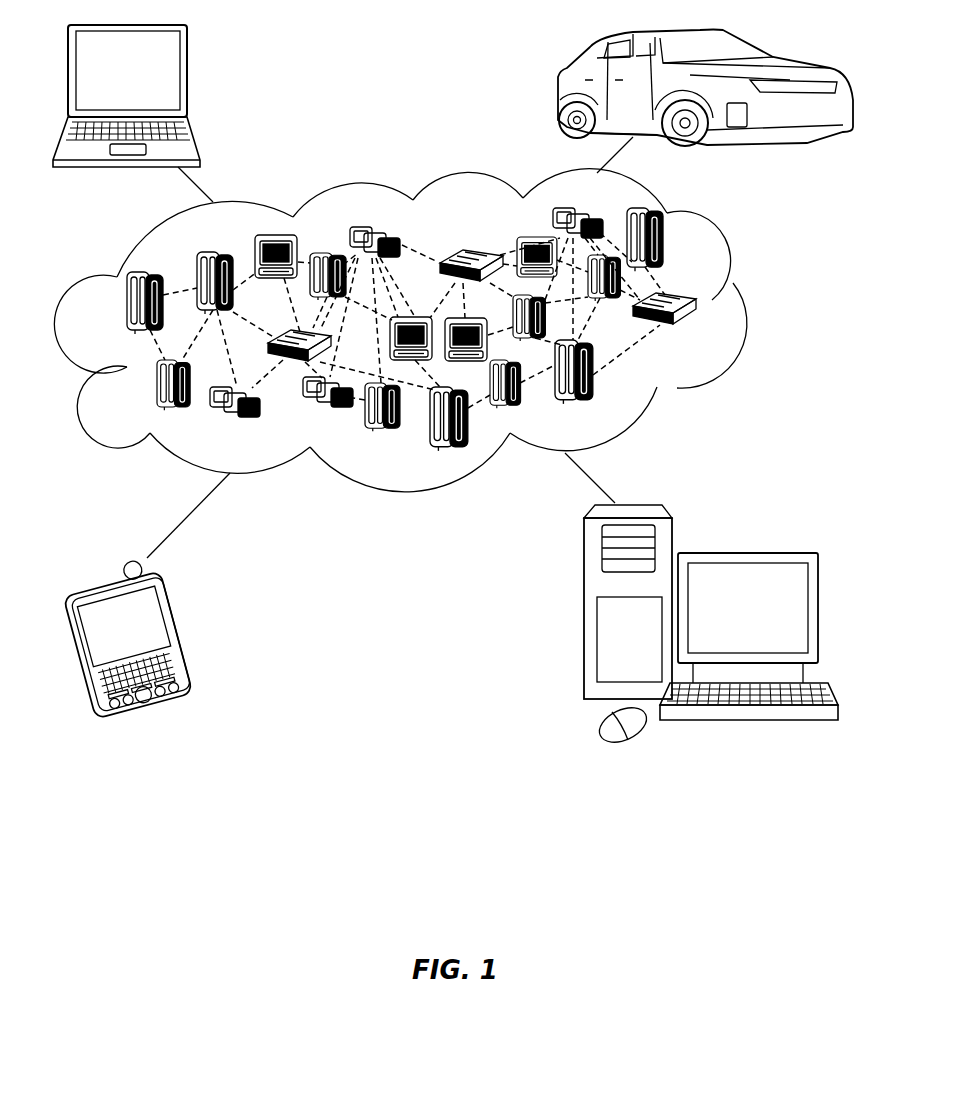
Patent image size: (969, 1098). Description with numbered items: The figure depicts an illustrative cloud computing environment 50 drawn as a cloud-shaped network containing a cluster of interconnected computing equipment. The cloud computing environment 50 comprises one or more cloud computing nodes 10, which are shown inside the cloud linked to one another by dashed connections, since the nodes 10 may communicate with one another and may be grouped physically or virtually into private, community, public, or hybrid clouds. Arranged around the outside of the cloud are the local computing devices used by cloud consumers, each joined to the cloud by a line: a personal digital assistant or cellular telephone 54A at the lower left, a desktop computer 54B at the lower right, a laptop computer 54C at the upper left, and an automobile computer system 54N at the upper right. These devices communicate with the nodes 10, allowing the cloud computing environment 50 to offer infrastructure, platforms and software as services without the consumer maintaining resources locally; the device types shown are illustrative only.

The cloud computing node 10 is at (453, 387).
The cloud computing environment 50 is at (748, 307).
The personal digital assistant (PDA) or cellular telephone 54A is at (178, 630).
The desktop computer 54B is at (746, 553).
The laptop computer 54C is at (187, 79).
The automobile computer system 54N is at (560, 90).